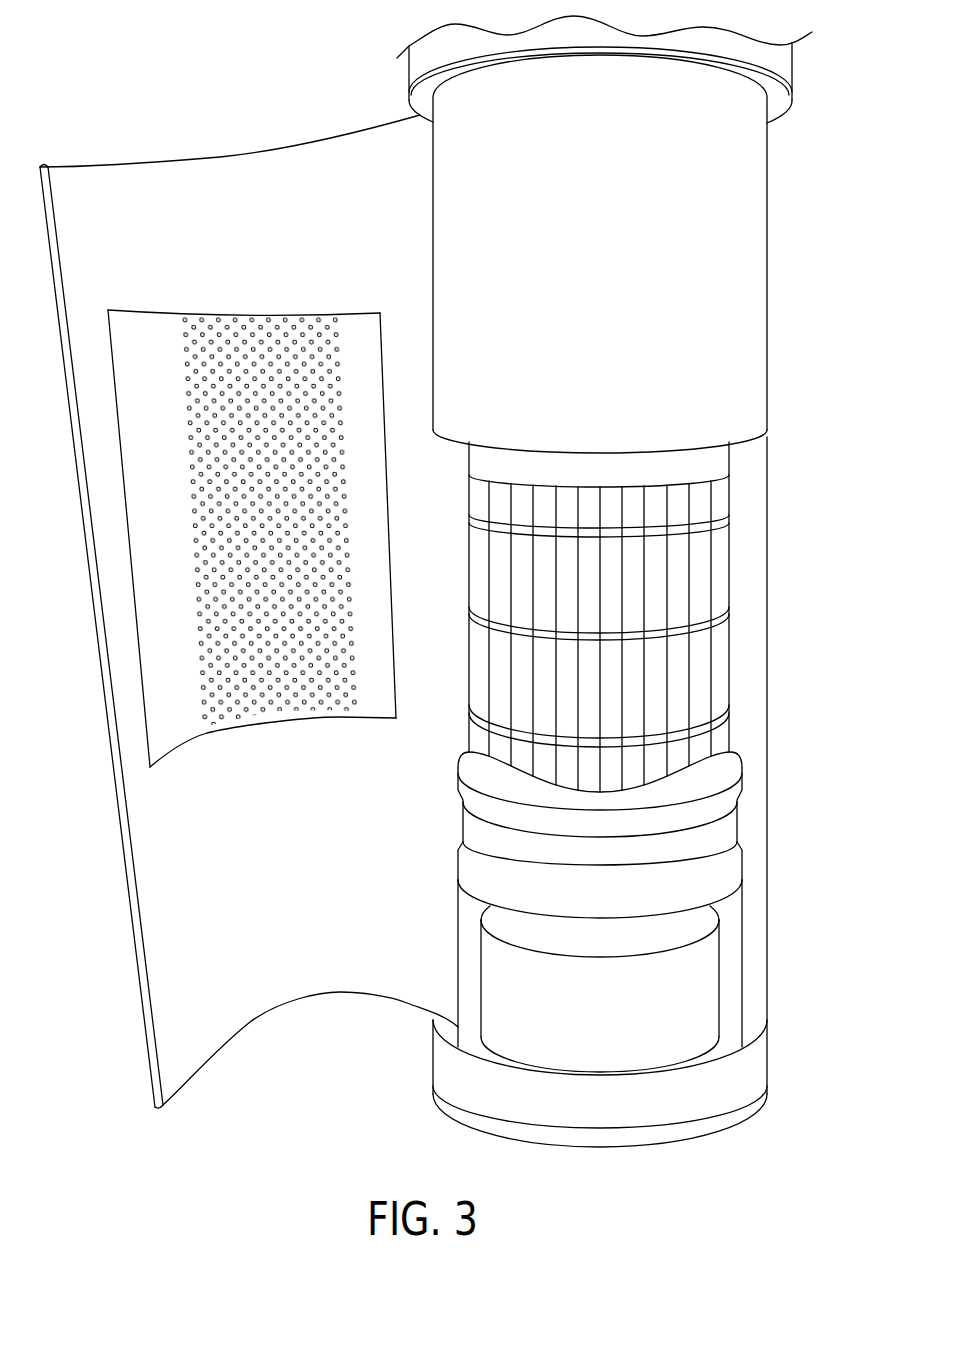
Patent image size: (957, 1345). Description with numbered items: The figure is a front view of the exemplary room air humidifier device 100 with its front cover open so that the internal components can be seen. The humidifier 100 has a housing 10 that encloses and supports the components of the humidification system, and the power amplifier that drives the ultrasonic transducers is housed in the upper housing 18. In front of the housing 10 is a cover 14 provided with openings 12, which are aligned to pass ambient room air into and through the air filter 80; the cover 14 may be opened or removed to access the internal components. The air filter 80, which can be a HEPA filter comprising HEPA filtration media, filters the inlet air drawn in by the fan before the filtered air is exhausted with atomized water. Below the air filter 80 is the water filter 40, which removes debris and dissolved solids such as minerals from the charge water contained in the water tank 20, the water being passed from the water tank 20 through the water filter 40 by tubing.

The room air humidifier device 100 is at (838, 210).
The housing 10 is at (767, 392).
The upper housing 18 is at (752, 305).
The air filter 80 is at (720, 635).
The water filter 40 is at (727, 822).
The water tank 20 is at (705, 973).
The cover 14 is at (107, 620).
The openings 12 is at (217, 655).